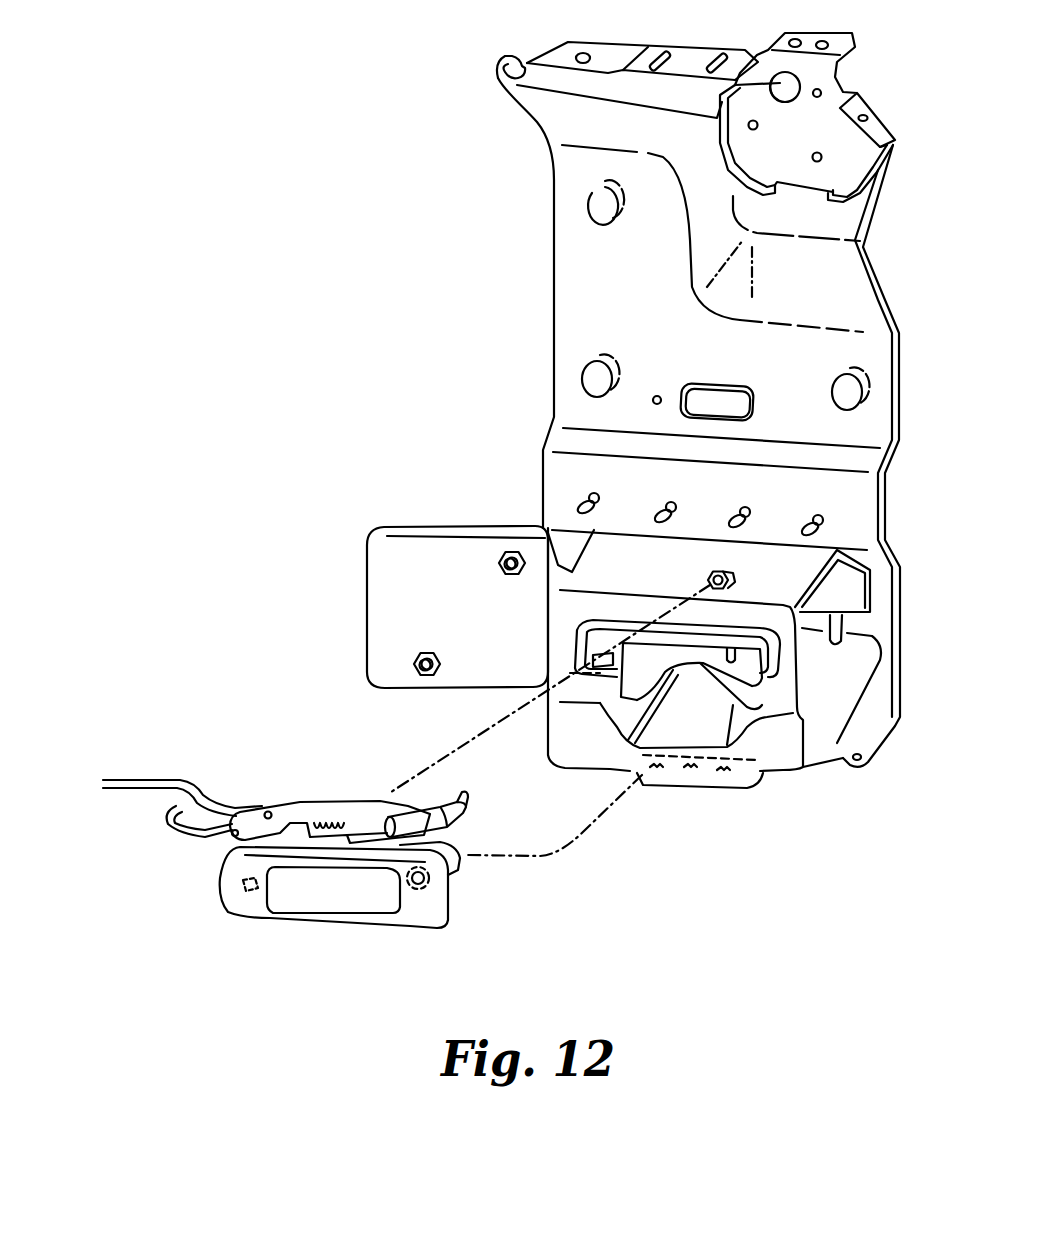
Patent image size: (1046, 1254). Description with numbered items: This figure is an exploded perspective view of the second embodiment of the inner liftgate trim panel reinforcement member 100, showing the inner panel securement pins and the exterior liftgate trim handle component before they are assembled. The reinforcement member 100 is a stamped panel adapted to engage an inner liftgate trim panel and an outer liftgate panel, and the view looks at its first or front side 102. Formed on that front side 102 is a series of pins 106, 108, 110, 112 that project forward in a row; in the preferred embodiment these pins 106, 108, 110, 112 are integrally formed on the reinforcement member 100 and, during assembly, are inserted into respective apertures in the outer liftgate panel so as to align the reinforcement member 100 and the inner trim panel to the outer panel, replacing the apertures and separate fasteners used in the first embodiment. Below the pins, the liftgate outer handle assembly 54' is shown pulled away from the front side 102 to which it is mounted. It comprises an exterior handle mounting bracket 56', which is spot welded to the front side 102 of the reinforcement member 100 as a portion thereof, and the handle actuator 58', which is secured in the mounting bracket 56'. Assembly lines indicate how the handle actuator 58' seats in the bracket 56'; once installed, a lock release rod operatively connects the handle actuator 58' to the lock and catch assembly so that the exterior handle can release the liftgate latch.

The reinforcement member 100 is at (875, 284).
The front side 102 is at (572, 222).
The pin 106 is at (590, 490).
The pin 108 is at (667, 490).
The pin 110 is at (747, 487).
The pin 112 is at (808, 500).
The liftgate outer handle assembly 54' is at (315, 633).
The exterior handle mounting bracket 56' is at (664, 692).
The handle actuator 58' is at (285, 887).